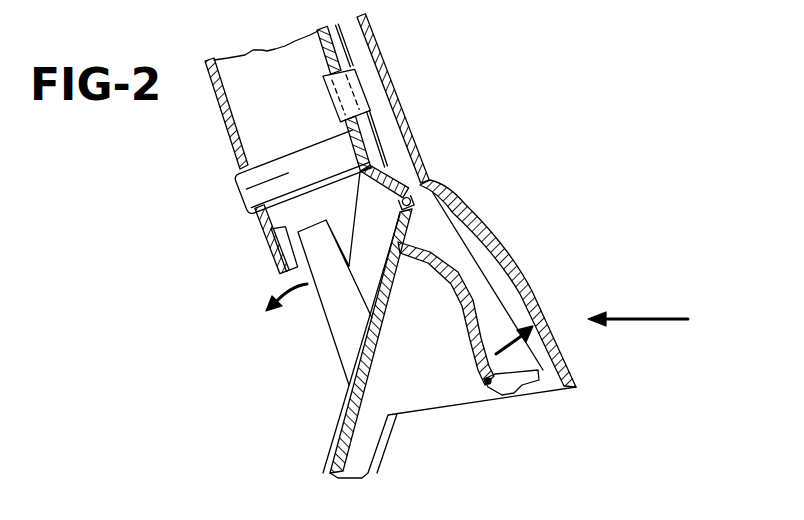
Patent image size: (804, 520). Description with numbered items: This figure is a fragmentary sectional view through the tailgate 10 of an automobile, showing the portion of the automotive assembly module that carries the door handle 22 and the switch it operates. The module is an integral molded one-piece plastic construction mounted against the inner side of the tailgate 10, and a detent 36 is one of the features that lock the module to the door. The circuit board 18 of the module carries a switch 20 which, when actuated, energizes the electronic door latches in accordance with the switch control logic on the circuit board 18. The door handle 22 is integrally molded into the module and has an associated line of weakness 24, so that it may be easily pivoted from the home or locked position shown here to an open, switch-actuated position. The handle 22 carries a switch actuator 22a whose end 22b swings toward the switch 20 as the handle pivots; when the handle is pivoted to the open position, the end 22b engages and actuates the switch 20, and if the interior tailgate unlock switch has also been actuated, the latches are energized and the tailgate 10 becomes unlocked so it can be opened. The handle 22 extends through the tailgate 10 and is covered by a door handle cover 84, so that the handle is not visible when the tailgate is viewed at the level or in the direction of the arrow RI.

The tailgate 10 is at (408, 143).
The circuit board 18 is at (223, 127).
The switch 20 is at (283, 247).
The door handle 22 is at (493, 392).
The switch actuator 22a is at (330, 332).
The end 22b is at (313, 220).
The line of weakness 24 is at (345, 410).
The detent 36 is at (371, 87).
The door handle cover 84 is at (491, 232).
The arrow RI is at (643, 317).